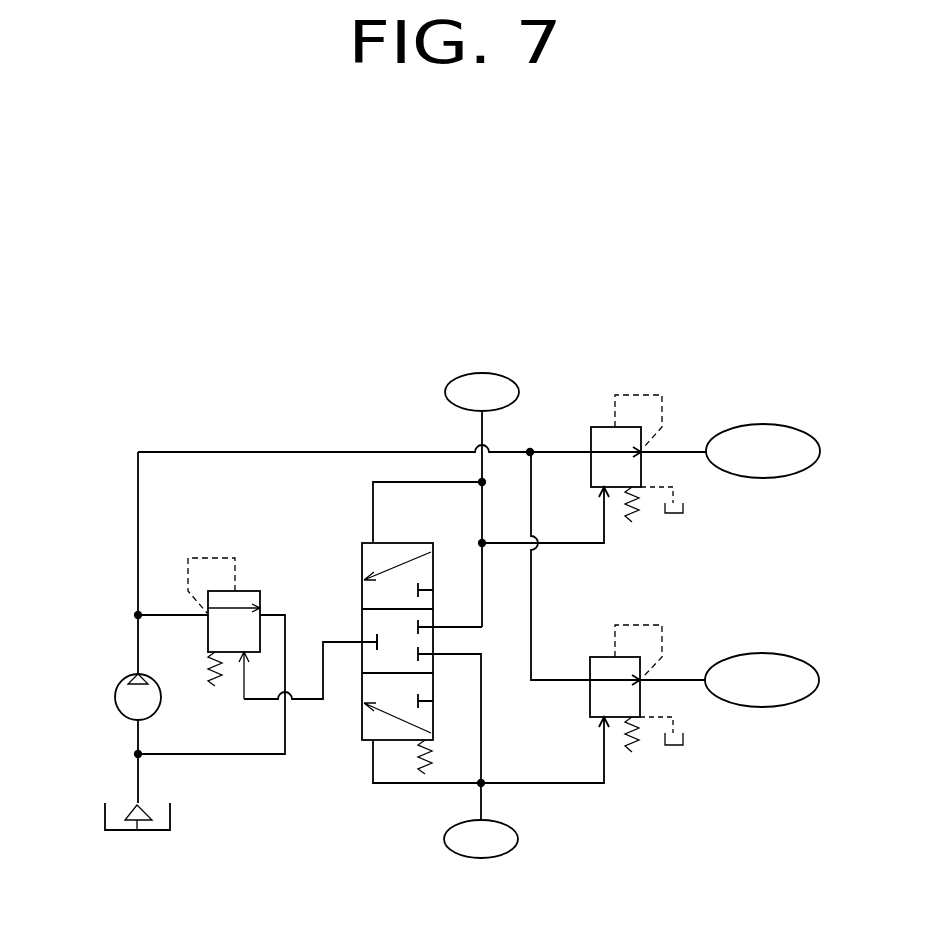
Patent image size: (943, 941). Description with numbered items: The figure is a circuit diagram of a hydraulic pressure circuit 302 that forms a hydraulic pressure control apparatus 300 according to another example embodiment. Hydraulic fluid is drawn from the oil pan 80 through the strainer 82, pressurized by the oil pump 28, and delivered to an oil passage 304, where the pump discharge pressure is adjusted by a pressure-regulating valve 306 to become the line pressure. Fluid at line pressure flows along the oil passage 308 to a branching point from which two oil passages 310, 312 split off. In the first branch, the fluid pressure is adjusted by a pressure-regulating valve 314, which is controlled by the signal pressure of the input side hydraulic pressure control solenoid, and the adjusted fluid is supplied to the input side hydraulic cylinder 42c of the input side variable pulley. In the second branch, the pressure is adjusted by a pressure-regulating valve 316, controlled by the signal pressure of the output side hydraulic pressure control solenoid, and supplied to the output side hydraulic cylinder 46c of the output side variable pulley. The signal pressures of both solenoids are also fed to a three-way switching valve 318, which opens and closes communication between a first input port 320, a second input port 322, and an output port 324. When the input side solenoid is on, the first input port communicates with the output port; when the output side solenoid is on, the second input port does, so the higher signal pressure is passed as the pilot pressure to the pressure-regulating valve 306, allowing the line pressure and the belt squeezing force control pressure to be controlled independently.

The oil pump 28 is at (115, 698).
The oil pan 80 is at (170, 817).
The strainer 82 is at (138, 826).
The hydraulic pressure control apparatus 300 is at (569, 282).
The hydraulic pressure circuit 302 is at (392, 360).
The oil passage 304 is at (137, 646).
The pressure-regulating valve 306 is at (255, 564).
The oil passage 308 is at (258, 452).
The oil passage 310 is at (558, 452).
The oil passage 312 is at (531, 590).
The pressure-regulating valve 314 is at (669, 422).
The pressure-regulating valve 316 is at (668, 654).
The three-way switching valve 318 is at (347, 761).
The first input port 320 is at (435, 626).
The second input port 322 is at (436, 655).
The output port 324 is at (360, 642).
The input side hydraulic cylinder 42c is at (773, 430).
The output side hydraulic cylinder 46c is at (772, 662).